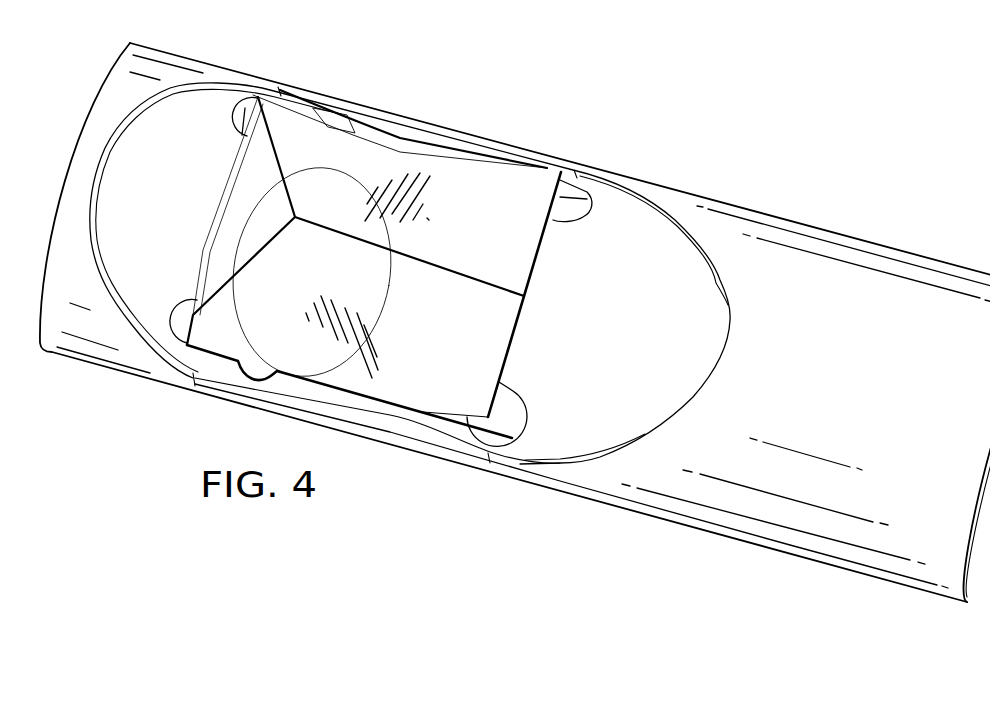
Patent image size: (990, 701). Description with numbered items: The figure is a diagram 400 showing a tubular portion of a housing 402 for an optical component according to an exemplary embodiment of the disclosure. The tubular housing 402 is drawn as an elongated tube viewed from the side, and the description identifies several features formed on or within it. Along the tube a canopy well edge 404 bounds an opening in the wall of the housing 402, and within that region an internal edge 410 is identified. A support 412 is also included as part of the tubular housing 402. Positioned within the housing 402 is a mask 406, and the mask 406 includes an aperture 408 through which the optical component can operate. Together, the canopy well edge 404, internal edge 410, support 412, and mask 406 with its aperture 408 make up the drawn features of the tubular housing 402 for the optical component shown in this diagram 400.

The diagram 400 is at (515, 322).
The tubular housing 402 is at (881, 390).
The canopy well edge 404 is at (153, 110).
The mask 406 is at (530, 443).
The aperture 408 is at (380, 291).
The internal edge 410 is at (546, 242).
The support 412 is at (450, 145).